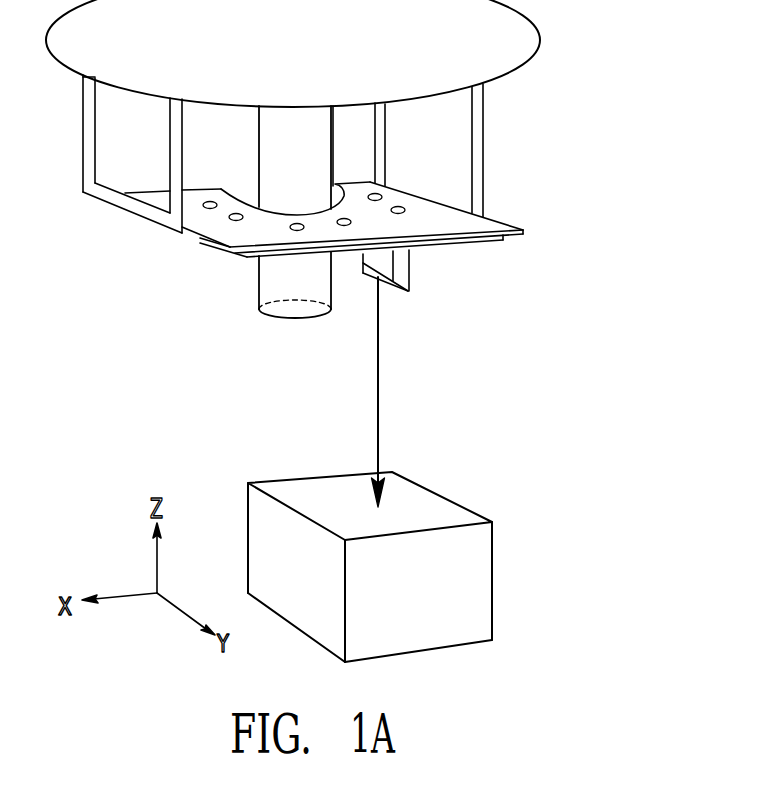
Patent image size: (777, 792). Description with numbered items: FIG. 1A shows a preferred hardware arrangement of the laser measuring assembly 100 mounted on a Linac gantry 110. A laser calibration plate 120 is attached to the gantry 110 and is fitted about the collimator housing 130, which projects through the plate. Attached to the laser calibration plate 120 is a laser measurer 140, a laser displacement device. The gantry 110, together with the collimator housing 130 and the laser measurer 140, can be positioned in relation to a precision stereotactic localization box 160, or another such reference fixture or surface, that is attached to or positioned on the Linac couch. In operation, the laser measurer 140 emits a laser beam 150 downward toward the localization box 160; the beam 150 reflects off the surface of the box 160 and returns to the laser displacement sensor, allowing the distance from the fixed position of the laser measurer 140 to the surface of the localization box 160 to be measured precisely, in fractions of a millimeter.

The laser measuring assembly 100 is at (369, 161).
The Linac gantry 110 is at (503, 28).
The laser calibration plate 120 is at (523, 231).
The collimator housing 130 is at (258, 286).
The laser measurer 140 is at (405, 270).
The laser beam 150 is at (380, 417).
The stereotactic localization box 160 is at (493, 585).